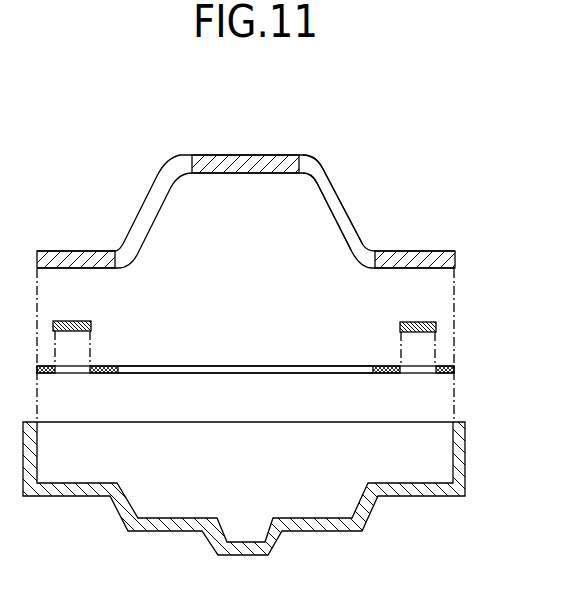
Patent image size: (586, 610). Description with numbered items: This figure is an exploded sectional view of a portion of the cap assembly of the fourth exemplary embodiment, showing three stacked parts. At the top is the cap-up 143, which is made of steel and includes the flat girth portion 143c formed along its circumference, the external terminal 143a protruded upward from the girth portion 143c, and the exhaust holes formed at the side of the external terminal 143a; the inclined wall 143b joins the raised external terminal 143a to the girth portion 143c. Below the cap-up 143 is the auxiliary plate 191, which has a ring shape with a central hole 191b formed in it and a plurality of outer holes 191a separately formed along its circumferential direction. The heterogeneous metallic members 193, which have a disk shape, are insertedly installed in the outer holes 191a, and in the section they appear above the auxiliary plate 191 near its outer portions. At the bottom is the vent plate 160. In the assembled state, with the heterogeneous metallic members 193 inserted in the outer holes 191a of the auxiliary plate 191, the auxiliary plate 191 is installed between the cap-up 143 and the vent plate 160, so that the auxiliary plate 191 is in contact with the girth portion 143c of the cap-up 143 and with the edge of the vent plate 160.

The cap-up 143 is at (286, 178).
The external terminal 143a is at (252, 152).
The inclined wall portion of bracket 143b is at (340, 187).
The girth portion 143c is at (412, 250).
The auxiliary plate 191 is at (282, 358).
The outer holes 191a is at (418, 375).
The central hole 191b is at (323, 366).
The heterogeneous metallic members 193 is at (444, 326).
The vent plate 160 is at (466, 455).